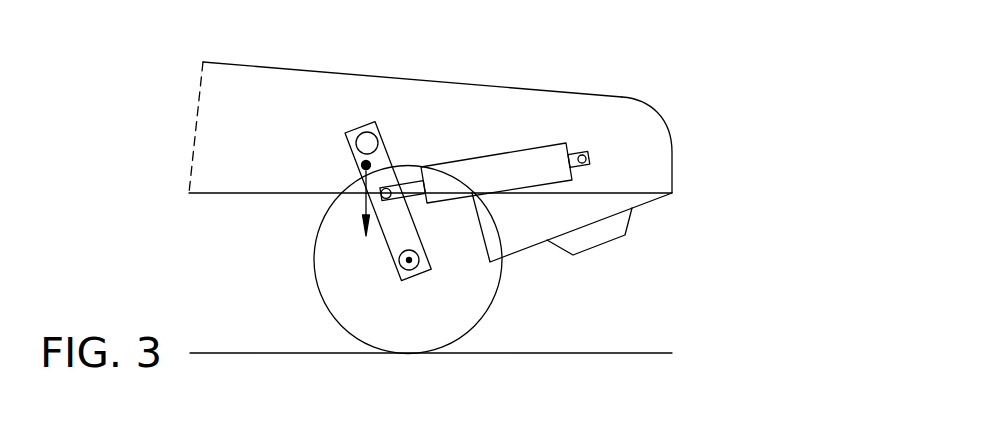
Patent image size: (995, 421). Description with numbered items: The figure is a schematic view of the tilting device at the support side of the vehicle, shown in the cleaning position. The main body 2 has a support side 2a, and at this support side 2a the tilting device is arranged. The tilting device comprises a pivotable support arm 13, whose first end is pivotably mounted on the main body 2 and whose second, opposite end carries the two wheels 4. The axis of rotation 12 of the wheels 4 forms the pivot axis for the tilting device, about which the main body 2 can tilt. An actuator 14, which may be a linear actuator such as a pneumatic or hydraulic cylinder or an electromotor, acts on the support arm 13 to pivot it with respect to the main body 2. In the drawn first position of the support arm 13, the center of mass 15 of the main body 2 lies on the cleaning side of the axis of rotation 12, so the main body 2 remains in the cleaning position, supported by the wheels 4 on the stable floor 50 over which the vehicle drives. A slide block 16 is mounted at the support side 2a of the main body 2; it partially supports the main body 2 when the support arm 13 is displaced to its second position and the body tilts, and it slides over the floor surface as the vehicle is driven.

The main body 2 is at (360, 107).
The support side 2a is at (552, 95).
The wheels 4 is at (458, 293).
The axis of rotation 12 is at (409, 260).
The pivotable support arm 13 is at (398, 225).
The actuator 14 is at (507, 170).
The center of mass 15 is at (364, 164).
The slide block 16 is at (599, 233).
The stable floor 50 is at (625, 353).